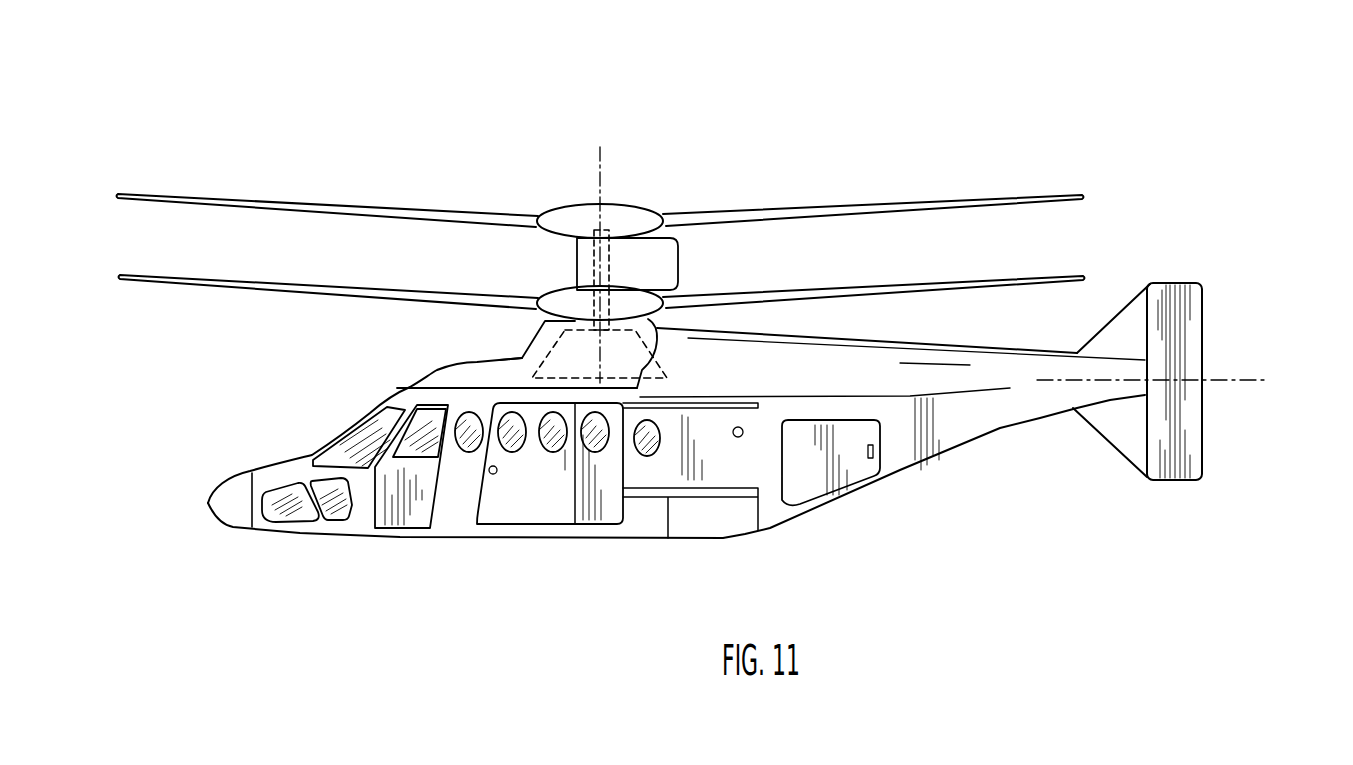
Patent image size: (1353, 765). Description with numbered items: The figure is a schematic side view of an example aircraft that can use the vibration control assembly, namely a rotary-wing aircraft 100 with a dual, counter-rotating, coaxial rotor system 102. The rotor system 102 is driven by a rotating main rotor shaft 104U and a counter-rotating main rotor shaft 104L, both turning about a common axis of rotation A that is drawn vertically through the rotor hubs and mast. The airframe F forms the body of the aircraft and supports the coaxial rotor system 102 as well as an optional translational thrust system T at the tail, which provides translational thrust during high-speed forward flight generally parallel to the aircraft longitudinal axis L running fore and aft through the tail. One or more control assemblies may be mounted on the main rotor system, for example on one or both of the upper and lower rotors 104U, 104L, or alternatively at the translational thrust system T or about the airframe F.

The rotary-wing aircraft 100 is at (758, 157).
The dual, counter-rotating, coaxial rotor system 102 is at (624, 205).
The rotating main rotor shaft 104U is at (610, 263).
The counter-rotating main rotor shaft 104L is at (694, 290).
The axis of rotation A is at (600, 163).
The airframe F is at (502, 512).
The translational thrust system T is at (1177, 247).
The aircraft longitudinal axis L is at (1253, 381).